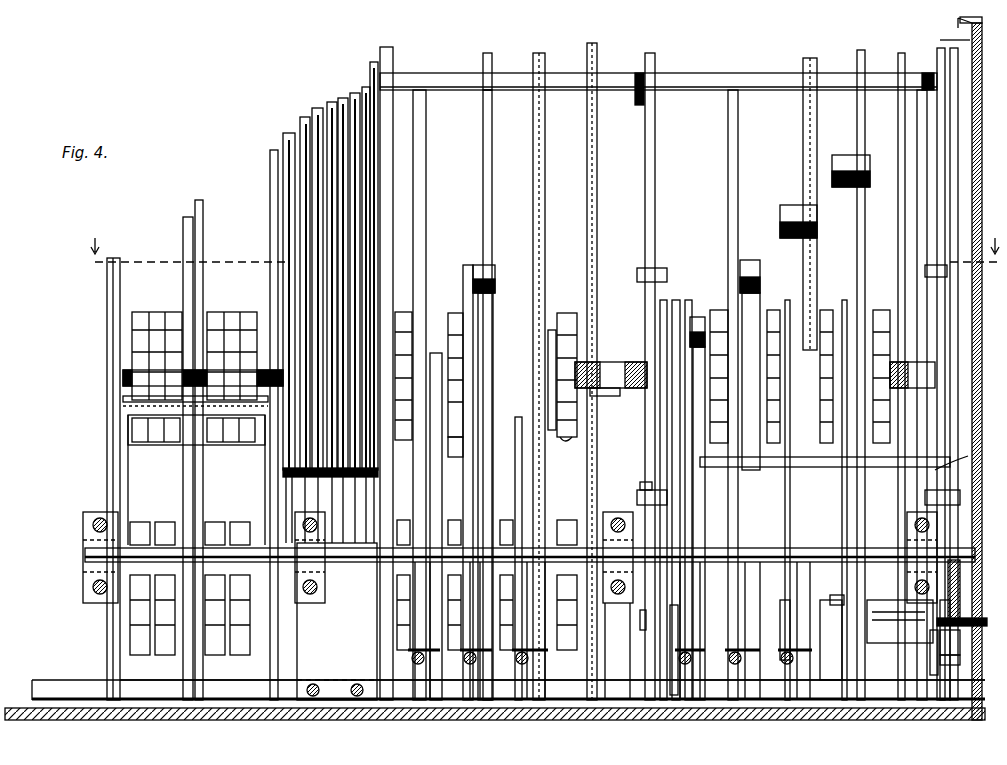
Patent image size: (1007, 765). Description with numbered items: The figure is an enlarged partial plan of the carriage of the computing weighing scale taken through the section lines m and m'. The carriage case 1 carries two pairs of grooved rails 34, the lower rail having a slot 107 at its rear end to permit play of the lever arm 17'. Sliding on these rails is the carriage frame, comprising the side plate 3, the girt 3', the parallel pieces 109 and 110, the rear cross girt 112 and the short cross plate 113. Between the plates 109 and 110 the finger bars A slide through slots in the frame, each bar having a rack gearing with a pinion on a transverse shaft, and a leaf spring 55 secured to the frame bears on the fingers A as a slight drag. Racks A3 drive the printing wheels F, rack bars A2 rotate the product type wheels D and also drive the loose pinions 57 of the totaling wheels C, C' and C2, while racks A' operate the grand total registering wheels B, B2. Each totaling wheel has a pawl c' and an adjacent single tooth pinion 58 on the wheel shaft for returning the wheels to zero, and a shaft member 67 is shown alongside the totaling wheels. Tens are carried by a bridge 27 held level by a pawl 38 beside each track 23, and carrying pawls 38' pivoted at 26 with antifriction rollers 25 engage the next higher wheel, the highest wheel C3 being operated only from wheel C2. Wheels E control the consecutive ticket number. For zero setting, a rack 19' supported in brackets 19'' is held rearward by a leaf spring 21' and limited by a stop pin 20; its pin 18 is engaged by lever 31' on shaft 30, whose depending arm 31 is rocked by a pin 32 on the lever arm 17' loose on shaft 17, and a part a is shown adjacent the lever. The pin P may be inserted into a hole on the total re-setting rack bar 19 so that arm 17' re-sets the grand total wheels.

The carriage case 1 is at (48, 708).
The side plate 3 is at (952, 369).
The girt 3' is at (658, 82).
The slot 107 is at (970, 22).
The grooved rails 34 is at (940, 40).
The frame plate 109 is at (393, 190).
The frame plate 110 is at (270, 240).
The finger bars A is at (330, 302).
The racks A' is at (824, 204).
The rack bars A2 is at (483, 223).
The racks A3 is at (183, 282).
The section line m is at (178, 255).
The section line m' is at (978, 255).
The consecutive number wheels E is at (234, 442).
The printing wheels F is at (216, 522).
The bridge 27 is at (702, 492).
The shaft 30 is at (78, 552).
The leaf spring 55 is at (337, 609).
The cross girt 112 is at (244, 685).
The totaling wheel C3 is at (406, 363).
The antifriction rollers 25 is at (473, 290).
The carrying pawls 38' is at (635, 418).
The totaling wheel C' is at (510, 495).
The totaling wheel C is at (736, 365).
The single tooth pinions 58 is at (552, 330).
The shaft 67 is at (640, 362).
The pinions 57 is at (598, 396).
The pawl c' is at (558, 448).
The totaling wheel C2 is at (455, 460).
The type wheels D is at (410, 520).
The brackets 19'' is at (773, 371).
The stop pin 20 is at (652, 490).
The leaf spring 21' is at (766, 376).
The rack 19' is at (808, 443).
The re-setting rack 19 is at (897, 375).
The tracks 23 is at (533, 203).
The registering wheels B is at (780, 364).
The registering wheel B2 is at (772, 310).
The cross plate 113 is at (882, 467).
The shaft 17 is at (900, 621).
The pin P is at (954, 636).
The depending arm 31 is at (976, 590).
The pin 32 is at (973, 639).
The lever arm 17' is at (973, 652).
The pivot 26 is at (833, 640).
The lug a is at (839, 627).
The pin 18 is at (640, 622).
The lever 31' is at (632, 617).
The pawl 38 is at (807, 579).